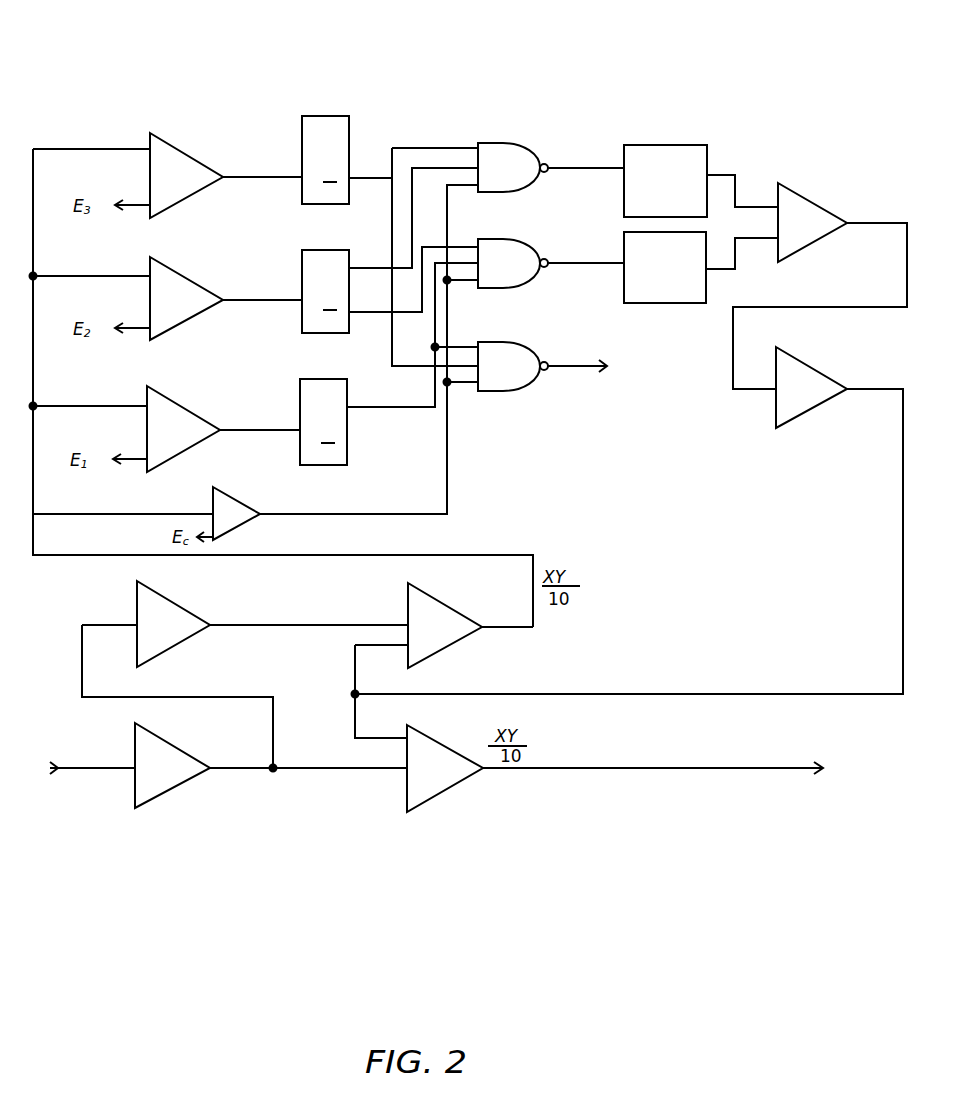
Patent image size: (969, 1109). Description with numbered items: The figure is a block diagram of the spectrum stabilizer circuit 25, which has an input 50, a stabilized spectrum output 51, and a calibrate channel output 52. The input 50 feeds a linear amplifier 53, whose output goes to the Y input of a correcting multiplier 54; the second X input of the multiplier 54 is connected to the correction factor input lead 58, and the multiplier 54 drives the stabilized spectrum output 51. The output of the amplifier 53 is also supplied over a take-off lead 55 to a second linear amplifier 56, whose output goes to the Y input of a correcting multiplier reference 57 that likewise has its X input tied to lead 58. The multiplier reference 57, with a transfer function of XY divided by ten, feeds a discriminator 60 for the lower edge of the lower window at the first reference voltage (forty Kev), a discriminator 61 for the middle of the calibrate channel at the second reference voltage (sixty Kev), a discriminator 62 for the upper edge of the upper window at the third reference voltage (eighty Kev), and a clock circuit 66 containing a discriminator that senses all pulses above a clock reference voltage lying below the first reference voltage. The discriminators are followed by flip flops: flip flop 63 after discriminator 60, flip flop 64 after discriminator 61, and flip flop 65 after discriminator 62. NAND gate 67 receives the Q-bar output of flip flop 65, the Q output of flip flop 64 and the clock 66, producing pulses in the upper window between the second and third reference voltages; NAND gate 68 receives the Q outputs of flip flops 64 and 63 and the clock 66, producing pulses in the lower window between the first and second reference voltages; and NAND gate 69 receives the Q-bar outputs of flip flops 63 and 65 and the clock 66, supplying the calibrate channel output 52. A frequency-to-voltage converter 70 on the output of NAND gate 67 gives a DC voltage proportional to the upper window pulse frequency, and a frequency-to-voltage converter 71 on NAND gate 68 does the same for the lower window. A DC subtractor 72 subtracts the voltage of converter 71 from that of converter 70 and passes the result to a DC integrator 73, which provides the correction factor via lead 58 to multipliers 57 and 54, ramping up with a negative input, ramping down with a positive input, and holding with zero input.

The spectrum stabilizer circuit 25 is at (635, 75).
The input 50 is at (98, 768).
The stabilized spectrum output 51 is at (595, 772).
The calibrate channel output 52 is at (579, 367).
The linear amplifier 53 is at (160, 795).
The correcting multiplier 54 is at (405, 773).
The take-off lead 55 is at (273, 745).
The second linear amplifier 56 is at (163, 597).
The correcting multiplier reference 57 is at (450, 606).
The correction factor input lead 58 is at (430, 697).
The discriminator 60 is at (183, 405).
The discriminator 61 is at (182, 283).
The discriminator 62 is at (187, 156).
The flip flop 63 is at (307, 467).
The flip flop 64 is at (321, 333).
The flip flop 65 is at (322, 204).
The clock circuit 66 is at (236, 527).
The NAND gate 67 is at (501, 143).
The NAND gate 68 is at (490, 238).
The NAND gate 69 is at (500, 343).
The frequency-to-voltage converter 70 is at (661, 144).
The frequency-to-voltage converter 71 is at (670, 303).
The DC subtractor 72 is at (797, 252).
The DC integrator 73 is at (790, 421).